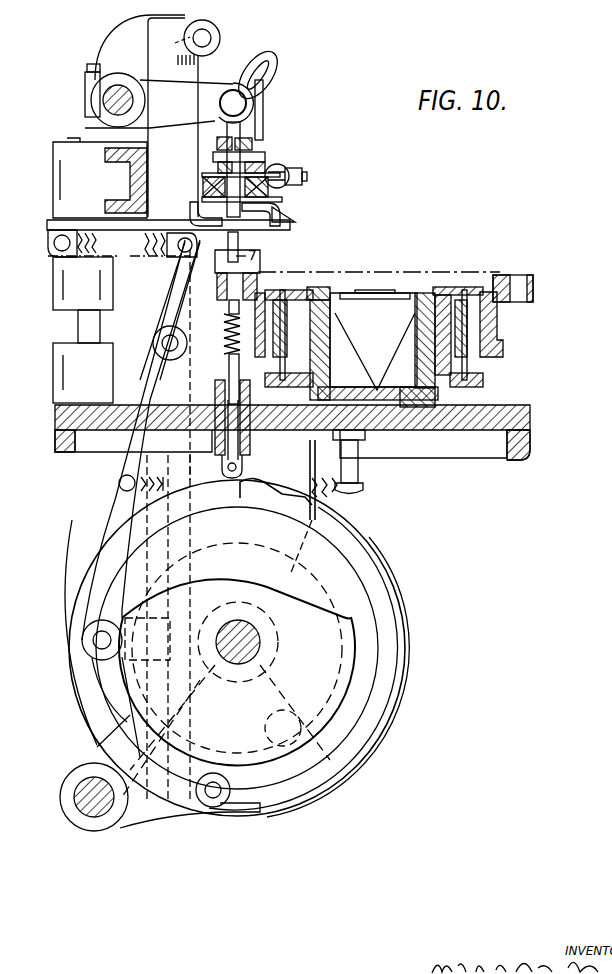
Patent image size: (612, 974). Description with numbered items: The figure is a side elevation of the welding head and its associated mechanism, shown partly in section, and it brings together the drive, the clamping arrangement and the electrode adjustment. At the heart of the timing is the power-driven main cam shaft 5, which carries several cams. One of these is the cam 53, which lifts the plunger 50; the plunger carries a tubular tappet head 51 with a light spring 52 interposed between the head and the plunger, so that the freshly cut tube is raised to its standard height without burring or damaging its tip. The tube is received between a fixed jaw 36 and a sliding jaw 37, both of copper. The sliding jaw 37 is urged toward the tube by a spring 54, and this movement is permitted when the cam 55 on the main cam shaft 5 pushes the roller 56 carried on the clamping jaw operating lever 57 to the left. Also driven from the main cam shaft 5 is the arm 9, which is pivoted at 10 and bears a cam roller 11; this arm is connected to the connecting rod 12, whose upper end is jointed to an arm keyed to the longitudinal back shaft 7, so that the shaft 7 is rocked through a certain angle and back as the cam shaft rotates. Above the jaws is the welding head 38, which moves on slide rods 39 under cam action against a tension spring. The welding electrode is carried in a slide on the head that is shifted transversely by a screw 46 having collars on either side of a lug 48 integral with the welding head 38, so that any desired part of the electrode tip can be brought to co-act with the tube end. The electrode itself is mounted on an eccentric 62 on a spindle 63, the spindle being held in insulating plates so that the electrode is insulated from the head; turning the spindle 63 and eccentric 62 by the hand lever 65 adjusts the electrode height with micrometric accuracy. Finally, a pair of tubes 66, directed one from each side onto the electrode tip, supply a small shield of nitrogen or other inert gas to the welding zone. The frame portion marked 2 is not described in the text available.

The frame 2 is at (218, 285).
The main cam shaft 5 is at (252, 646).
The longitudinal shaft 7 is at (100, 100).
The arm 9 is at (175, 792).
The pivot 10 is at (82, 806).
The cam roller 11 is at (363, 750).
The connecting rod 12 is at (178, 361).
The fixed jaw 36 is at (290, 220).
The sliding jaw 37 is at (206, 183).
The welding head 38 is at (303, 185).
The slide rods 39 is at (216, 153).
The screw 46 is at (305, 176).
The lug 48 is at (285, 170).
The plunger 50 is at (248, 392).
The tubular tappet head 51 is at (230, 318).
The light spring 52 is at (230, 343).
The cam 53 is at (250, 482).
The spring 54 is at (158, 250).
The cam 55 is at (300, 600).
The roller 56 is at (80, 642).
The clamping jaw operating lever 57 is at (108, 522).
The eccentric 62 is at (255, 150).
The spindle 63 is at (282, 220).
The hand lever 65 is at (240, 85).
The tubes 66 is at (193, 208).